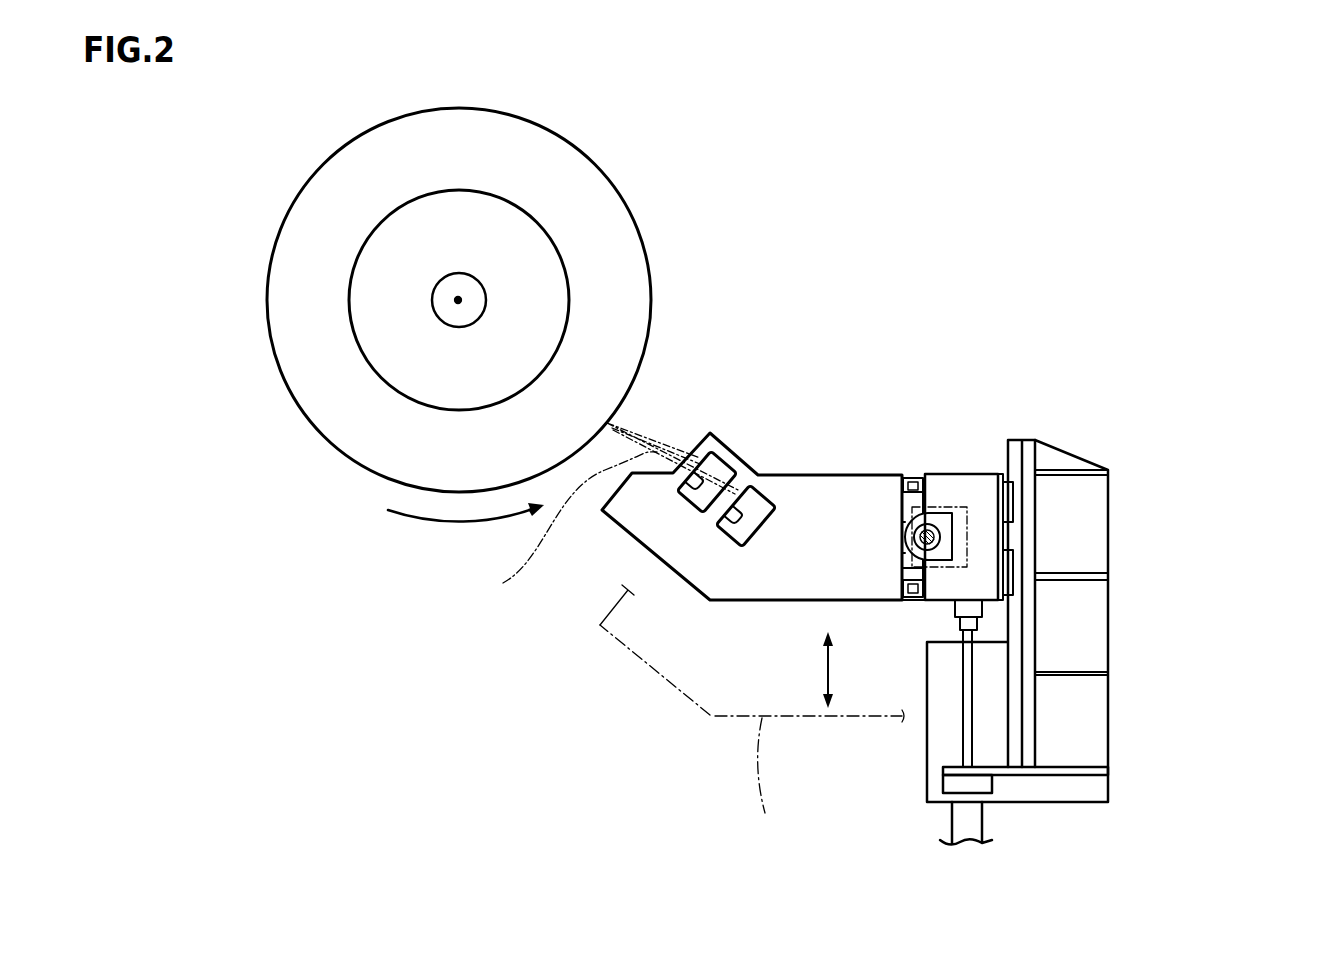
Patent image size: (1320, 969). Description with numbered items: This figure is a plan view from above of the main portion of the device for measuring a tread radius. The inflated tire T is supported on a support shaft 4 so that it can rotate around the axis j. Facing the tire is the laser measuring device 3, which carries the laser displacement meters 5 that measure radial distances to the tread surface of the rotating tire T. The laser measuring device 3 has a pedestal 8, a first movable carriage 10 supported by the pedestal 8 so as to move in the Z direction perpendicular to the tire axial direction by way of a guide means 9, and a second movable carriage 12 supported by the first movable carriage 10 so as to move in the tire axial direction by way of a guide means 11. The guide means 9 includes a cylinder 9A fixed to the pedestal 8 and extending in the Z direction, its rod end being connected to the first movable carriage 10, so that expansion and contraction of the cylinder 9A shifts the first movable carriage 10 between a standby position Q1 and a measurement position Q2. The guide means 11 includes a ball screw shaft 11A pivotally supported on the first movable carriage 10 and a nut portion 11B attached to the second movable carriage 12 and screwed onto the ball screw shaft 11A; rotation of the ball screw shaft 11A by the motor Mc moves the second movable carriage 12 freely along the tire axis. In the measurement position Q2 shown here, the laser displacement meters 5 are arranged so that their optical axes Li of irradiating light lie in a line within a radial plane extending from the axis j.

The inflated tire T is at (643, 242).
The support shaft 4 is at (457, 273).
The axis j is at (459, 300).
The optical axes Li is at (607, 510).
The second movable carriage 12 is at (807, 475).
The laser displacement meters 5 is at (683, 500).
The guide means 11 is at (902, 475).
The ball screw shaft 11A is at (933, 525).
The nut portion 11B is at (922, 477).
The first movable carriage 10 is at (968, 475).
The motor Mc is at (967, 522).
The laser measuring device 3 is at (1137, 536).
The pedestal 8 is at (1070, 730).
The guide means 9 is at (1000, 660).
The cylinder 9A is at (985, 817).
The Z direction Z is at (830, 670).
The standby position Q1 is at (770, 783).
The measurement position Q2 is at (765, 608).